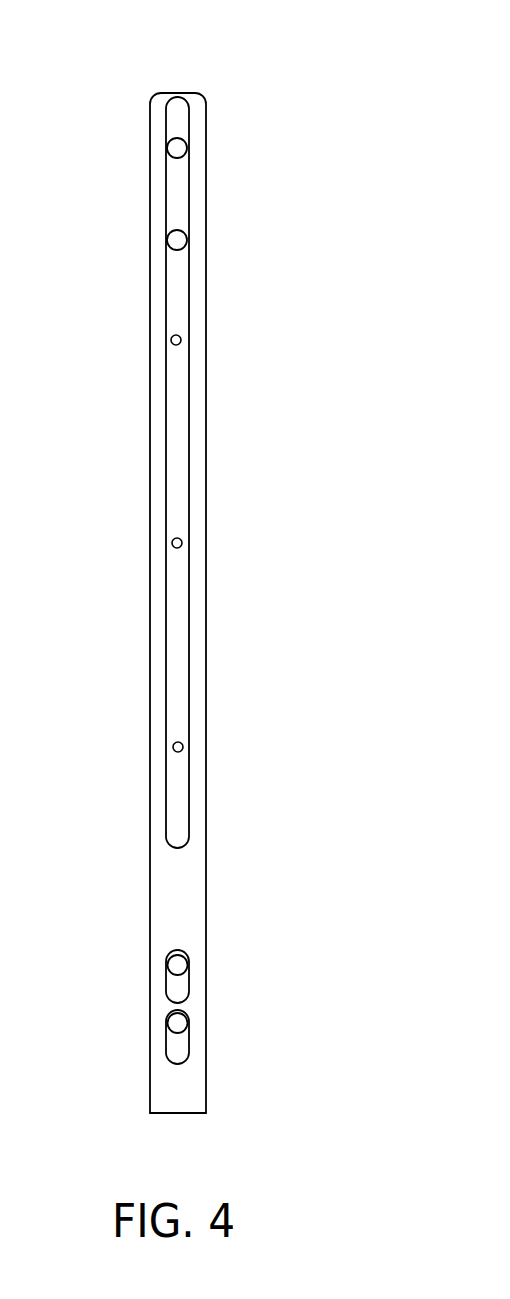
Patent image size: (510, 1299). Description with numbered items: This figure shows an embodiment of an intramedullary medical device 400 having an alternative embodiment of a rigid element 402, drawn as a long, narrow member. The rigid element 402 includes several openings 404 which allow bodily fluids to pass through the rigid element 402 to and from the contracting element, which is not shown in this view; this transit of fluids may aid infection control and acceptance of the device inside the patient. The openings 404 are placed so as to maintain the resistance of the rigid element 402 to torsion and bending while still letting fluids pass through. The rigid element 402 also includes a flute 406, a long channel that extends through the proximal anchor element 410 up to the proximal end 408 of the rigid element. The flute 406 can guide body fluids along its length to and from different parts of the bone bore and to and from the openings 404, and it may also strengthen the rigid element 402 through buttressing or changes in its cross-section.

The intramedullary medical device 400 is at (364, 204).
The rigid element 402 is at (152, 452).
The openings 404 is at (179, 335).
The flute 406 is at (173, 302).
The proximal end 408 is at (180, 98).
The proximal anchor element 410 is at (193, 178).